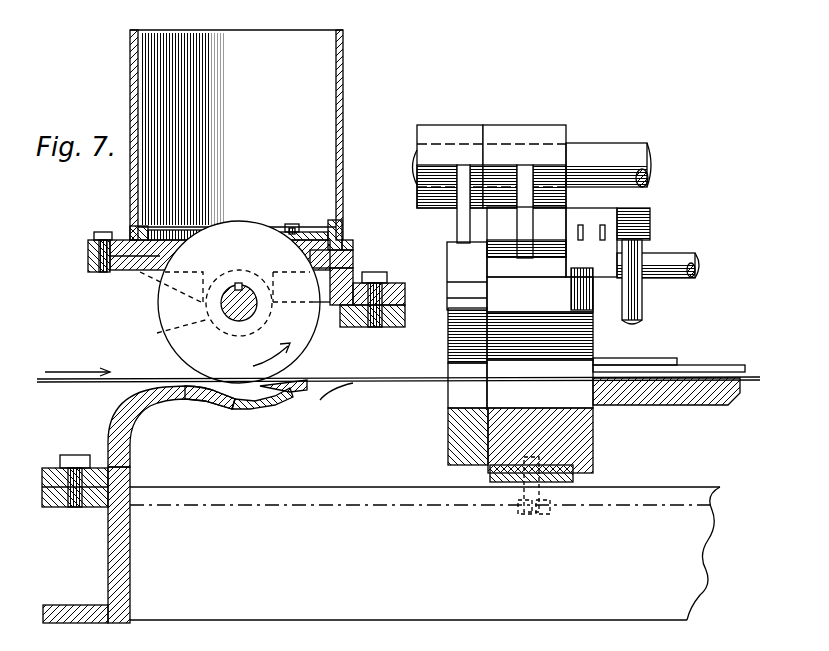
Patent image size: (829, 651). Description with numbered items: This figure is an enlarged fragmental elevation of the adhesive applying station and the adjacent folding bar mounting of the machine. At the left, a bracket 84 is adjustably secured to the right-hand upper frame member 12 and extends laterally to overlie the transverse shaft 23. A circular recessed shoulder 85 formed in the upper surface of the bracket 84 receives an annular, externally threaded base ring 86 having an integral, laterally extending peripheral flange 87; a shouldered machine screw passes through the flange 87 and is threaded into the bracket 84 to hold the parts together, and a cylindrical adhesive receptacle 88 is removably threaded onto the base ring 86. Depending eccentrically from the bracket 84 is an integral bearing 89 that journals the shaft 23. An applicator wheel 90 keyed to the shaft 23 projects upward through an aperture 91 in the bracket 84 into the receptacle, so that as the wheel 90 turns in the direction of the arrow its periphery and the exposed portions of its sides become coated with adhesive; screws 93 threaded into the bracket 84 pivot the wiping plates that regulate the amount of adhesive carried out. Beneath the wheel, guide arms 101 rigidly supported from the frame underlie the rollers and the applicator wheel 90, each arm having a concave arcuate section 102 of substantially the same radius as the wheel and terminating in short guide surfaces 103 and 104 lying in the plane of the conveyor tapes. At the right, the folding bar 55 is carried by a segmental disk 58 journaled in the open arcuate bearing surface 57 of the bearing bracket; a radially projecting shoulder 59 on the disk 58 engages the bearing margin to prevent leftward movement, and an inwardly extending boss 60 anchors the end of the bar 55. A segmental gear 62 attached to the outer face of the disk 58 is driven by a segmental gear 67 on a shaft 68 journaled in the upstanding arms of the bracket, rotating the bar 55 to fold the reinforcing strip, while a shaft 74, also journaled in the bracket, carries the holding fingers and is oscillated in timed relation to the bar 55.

The upper frame member 12 is at (395, 313).
The transverse shaft 23 is at (238, 320).
The folding bar 55 is at (655, 400).
The arcuate bearing surface 57 is at (548, 276).
The segmental disk 58 is at (594, 342).
The radially projecting shoulder 59 is at (582, 299).
The inwardly extending boss 60 is at (672, 358).
The segmental gear 62 is at (453, 344).
The segmental gear 67 is at (452, 270).
The shaft 68 is at (604, 146).
The shaft 74 is at (676, 256).
The bracket 84 is at (122, 272).
The recessed shoulder 85 is at (135, 238).
The base ring 86 is at (330, 230).
The peripheral flange 87 is at (88, 252).
The receptacle 88 is at (343, 104).
The bearing 89 is at (157, 333).
The applicator wheel 90 is at (305, 333).
The aperture 91 is at (340, 258).
The screw 93 is at (291, 226).
The guide arm 101 is at (148, 422).
The concave arcuate section 102 is at (255, 403).
The guide surface 103 is at (202, 400).
The guide surface 104 is at (300, 392).